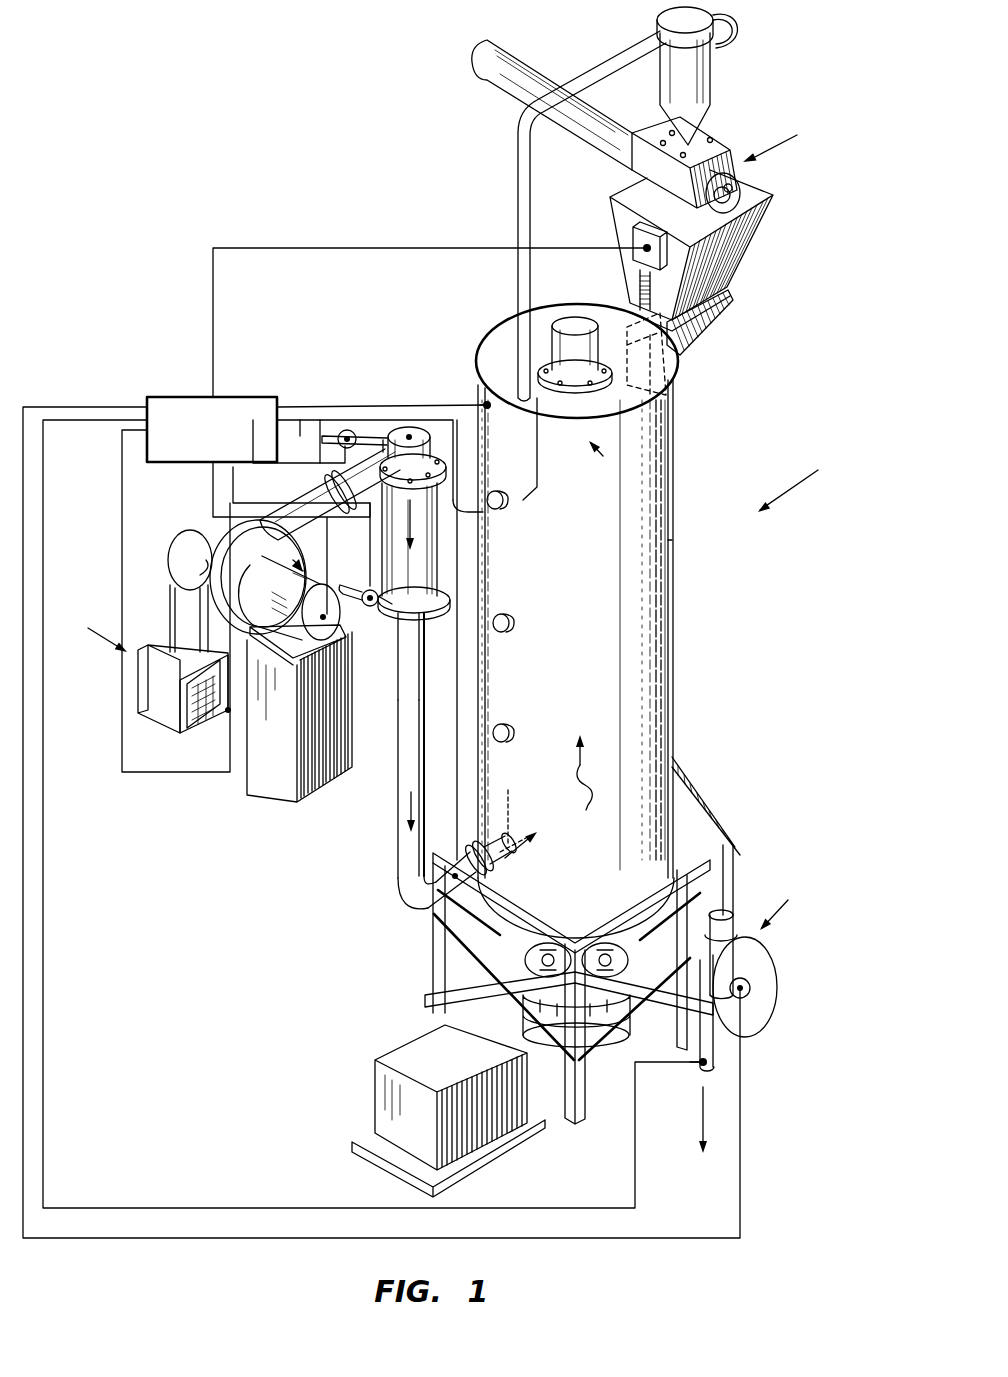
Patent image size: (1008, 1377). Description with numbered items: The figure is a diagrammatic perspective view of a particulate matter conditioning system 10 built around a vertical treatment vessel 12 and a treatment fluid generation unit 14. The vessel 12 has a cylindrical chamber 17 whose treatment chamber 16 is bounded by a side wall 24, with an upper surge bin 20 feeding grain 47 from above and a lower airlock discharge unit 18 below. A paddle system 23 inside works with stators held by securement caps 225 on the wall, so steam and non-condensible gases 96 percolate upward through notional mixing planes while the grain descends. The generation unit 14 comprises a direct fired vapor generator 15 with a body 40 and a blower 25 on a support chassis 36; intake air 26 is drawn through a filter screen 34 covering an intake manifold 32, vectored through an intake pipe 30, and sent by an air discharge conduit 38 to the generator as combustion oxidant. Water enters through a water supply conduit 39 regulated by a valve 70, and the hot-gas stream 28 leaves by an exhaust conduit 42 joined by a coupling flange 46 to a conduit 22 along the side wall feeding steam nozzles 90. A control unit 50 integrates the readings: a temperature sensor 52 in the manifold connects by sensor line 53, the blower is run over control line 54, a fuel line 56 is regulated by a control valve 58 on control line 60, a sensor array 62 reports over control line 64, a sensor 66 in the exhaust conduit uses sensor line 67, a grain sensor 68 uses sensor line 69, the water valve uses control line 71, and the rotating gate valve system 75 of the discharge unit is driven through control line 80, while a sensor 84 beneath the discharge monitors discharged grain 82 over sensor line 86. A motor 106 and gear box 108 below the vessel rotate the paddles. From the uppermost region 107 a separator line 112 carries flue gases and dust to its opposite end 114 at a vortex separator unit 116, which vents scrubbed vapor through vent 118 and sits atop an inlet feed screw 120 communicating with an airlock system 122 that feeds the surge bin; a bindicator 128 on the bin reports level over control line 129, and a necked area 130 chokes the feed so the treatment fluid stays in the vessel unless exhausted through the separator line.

The particulate matter conditioning system 10 is at (799, 481).
The vertical treatment vessel 12 is at (641, 620).
The treatment fluid generation unit 14 is at (224, 540).
The vapor generator 15 is at (498, 508).
The treatment chamber 16 is at (672, 548).
The cylindrical chamber 17 is at (726, 162).
The lower airlock discharge unit 18 is at (757, 922).
The upper surge bin 20 is at (748, 262).
The conduit 22 is at (506, 812).
The paddle system 23 is at (573, 308).
The side wall 24 is at (679, 404).
The blower 25 is at (188, 585).
The intake air 26 is at (100, 640).
The hot-gas stream 28 is at (399, 808).
The intake pipe 30 is at (182, 545).
The intake manifold 32 is at (160, 712).
The filter screen 34 is at (190, 725).
The support chassis 36 is at (310, 804).
The air discharge conduit 38 is at (330, 490).
The water supply conduit 39 is at (420, 618).
The body 40 is at (440, 555).
The exhaust conduit 42 is at (399, 832).
The coupling flange 46 is at (458, 880).
The grain 47 is at (606, 460).
The control unit 50 is at (258, 397).
The temperature sensor 52 is at (190, 680).
The sensor line 53 is at (122, 466).
The control line 54 is at (213, 480).
The fuel line 56 is at (328, 436).
The control valve 58 is at (348, 430).
The control line 60 is at (253, 466).
The sensor array 62 is at (412, 434).
The control line 64 is at (320, 420).
The sensor 66 is at (418, 914).
The sensor line 67 is at (383, 440).
The sensor 68 is at (480, 405).
The sensor line 69 is at (300, 420).
The valve 70 is at (365, 610).
The control line 71 is at (370, 552).
The rotating gate valve system 75 is at (770, 965).
The control line 80 is at (64, 407).
The discharged grain 82 is at (703, 1112).
The sensor 84 is at (700, 1066).
The sensor line 86 is at (90, 420).
The steam nozzles 90 is at (521, 827).
The treatment fluid 96 is at (598, 778).
The motor 106 is at (500, 1140).
The uppermost region 107 is at (538, 452).
The gear box 108 is at (612, 1030).
The separator line 112 is at (518, 215).
The opposite end 114 is at (660, 34).
The vortex separator unit 116 is at (706, 92).
The vent 118 is at (735, 30).
The inlet feed screw 120 is at (545, 58).
The airlock system 122 is at (742, 188).
The bindicator 128 is at (620, 235).
The control line 129 is at (340, 248).
The necked area 130 is at (712, 330).
The securement caps 225 is at (509, 502).